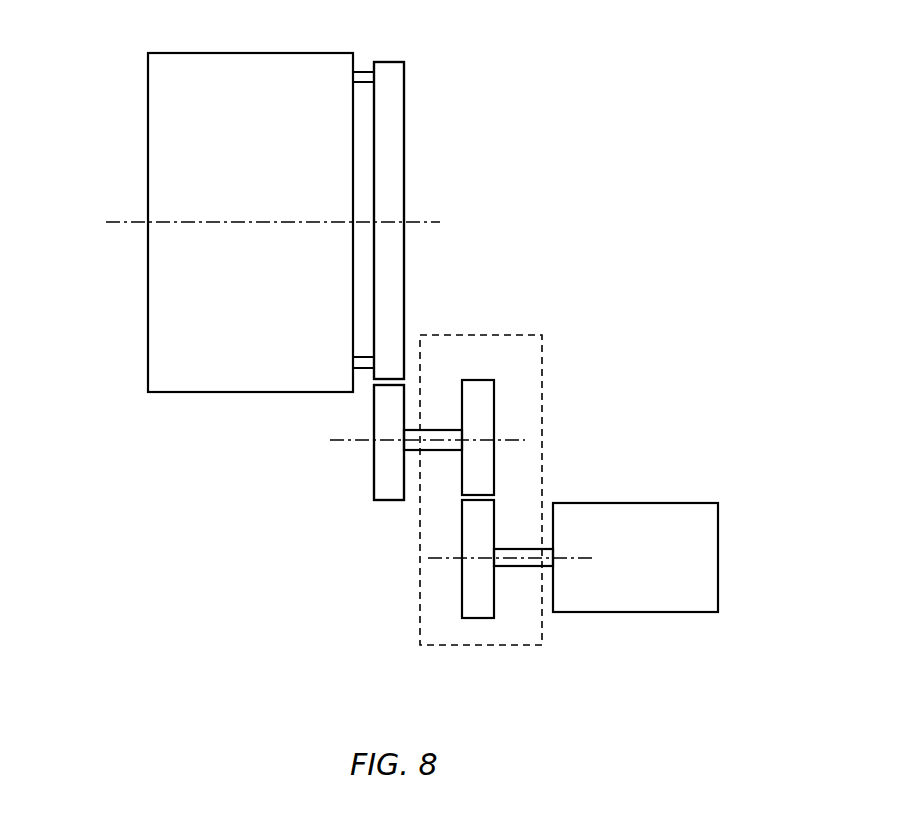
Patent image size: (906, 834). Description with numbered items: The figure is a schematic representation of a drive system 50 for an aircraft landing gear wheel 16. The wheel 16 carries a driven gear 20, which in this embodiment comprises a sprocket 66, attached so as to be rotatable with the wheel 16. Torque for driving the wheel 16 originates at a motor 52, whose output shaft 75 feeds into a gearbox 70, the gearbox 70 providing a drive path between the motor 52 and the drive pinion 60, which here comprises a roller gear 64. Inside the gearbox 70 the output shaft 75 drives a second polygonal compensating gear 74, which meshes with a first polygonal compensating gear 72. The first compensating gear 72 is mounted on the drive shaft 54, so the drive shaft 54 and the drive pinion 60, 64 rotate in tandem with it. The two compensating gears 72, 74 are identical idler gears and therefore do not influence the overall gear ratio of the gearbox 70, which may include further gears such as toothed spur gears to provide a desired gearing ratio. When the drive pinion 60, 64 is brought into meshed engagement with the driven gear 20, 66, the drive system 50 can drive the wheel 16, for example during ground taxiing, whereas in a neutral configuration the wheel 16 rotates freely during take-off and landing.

The wheel 16 is at (177, 112).
The driven gear 20 is at (404, 113).
The sprocket 66 is at (389, 220).
The drive pinion 60 is at (378, 475).
The roller gear 64 is at (389, 442).
The drive shaft 54 is at (428, 430).
The gearbox 70 is at (522, 335).
The first polygonal compensating gear 72 is at (482, 409).
The second polygonal compensating gear 74 is at (472, 574).
The output shaft 75 is at (520, 556).
The motor 52 is at (658, 502).
The drive system 50 is at (641, 160).